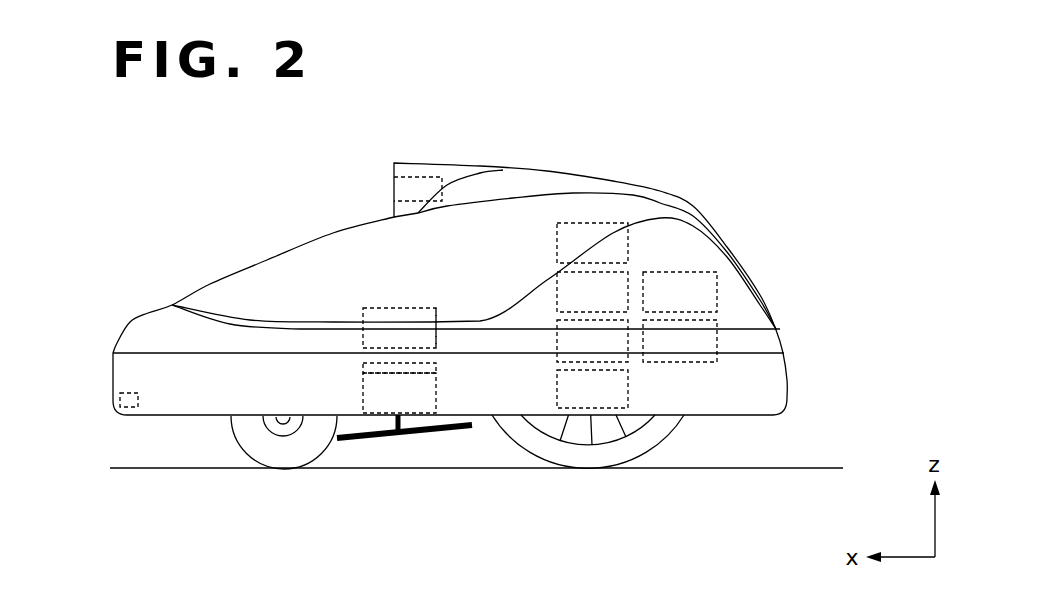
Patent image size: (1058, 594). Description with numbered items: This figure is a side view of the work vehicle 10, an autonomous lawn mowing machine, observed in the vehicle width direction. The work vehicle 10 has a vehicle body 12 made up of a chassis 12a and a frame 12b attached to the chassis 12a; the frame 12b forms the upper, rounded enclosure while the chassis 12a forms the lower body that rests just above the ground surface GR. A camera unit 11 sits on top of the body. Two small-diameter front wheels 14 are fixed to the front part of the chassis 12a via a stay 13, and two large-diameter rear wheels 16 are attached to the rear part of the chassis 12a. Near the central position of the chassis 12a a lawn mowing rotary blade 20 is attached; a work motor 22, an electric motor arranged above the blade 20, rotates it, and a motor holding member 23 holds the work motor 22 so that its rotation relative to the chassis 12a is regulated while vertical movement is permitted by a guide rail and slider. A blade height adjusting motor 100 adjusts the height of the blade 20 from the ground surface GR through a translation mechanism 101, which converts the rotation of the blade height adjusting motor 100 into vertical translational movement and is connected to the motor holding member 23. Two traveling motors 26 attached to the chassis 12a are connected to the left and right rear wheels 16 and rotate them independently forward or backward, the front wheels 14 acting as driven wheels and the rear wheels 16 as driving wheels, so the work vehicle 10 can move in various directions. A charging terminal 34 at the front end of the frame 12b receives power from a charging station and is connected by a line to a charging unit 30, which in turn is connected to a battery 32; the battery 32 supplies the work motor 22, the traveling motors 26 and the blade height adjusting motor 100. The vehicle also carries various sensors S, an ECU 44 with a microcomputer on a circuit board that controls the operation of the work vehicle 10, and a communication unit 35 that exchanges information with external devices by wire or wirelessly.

The work vehicle 10 is at (737, 137).
The camera unit 11 is at (421, 163).
The vehicle body 12 is at (870, 307).
The chassis 12a is at (757, 382).
The frame 12b is at (752, 307).
The stay 13 is at (282, 420).
The front wheels 14 is at (292, 447).
The rear wheels 16 is at (573, 452).
The blade 20 is at (400, 433).
The work motor 22 is at (362, 402).
The motor holding member 23 is at (362, 365).
The traveling motors 26 is at (557, 400).
The charging unit 30 is at (670, 272).
The battery 32 is at (680, 362).
The charging terminal 34 is at (118, 400).
The communication unit 35 is at (557, 243).
The ECU 44 is at (553, 300).
The blade height adjusting motor 100 is at (397, 307).
The translation mechanism 101 is at (437, 356).
The various sensors S is at (557, 338).
The ground surface GR is at (490, 472).